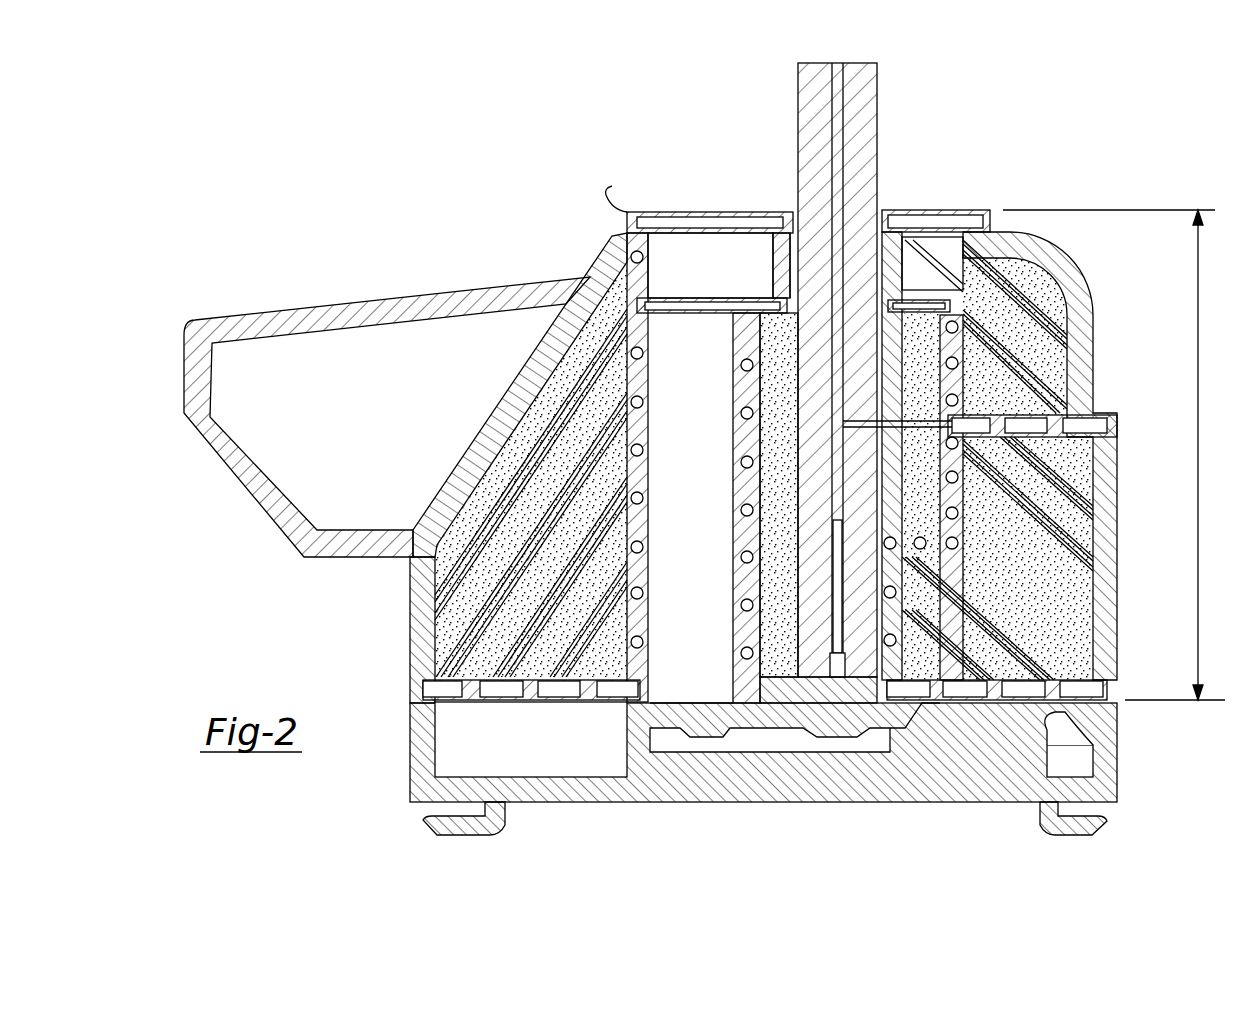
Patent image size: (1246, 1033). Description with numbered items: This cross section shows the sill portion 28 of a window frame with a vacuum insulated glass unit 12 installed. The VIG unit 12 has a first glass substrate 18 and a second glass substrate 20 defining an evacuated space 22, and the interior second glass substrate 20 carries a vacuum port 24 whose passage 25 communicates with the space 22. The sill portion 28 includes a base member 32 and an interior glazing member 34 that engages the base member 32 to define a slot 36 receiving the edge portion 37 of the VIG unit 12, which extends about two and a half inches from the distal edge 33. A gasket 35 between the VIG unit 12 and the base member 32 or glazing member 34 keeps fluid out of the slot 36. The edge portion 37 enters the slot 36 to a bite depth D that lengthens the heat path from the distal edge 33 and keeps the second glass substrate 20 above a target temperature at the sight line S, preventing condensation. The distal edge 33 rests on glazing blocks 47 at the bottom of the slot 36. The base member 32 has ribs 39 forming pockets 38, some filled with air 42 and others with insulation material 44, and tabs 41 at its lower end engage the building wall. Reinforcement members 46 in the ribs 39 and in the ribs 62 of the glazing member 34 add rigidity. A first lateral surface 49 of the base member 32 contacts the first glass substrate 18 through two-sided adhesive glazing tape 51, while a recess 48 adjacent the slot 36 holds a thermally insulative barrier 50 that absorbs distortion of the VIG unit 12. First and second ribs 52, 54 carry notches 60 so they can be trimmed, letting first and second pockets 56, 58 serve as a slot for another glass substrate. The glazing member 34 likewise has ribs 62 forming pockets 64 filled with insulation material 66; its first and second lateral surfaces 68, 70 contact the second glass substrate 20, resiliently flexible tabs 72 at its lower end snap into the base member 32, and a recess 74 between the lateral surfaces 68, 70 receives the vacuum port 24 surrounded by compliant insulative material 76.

The vacuum insulated glass unit 12 is at (843, 441).
The first glass substrate 18 is at (797, 115).
The second glass substrate 20 is at (880, 100).
The space 22 is at (833, 97).
The vacuum port 24 is at (1037, 310).
The passage 25 is at (1060, 450).
The sill portion 28 is at (504, 433).
The base member 32 is at (468, 283).
The distal edge 33 is at (833, 690).
The glazing member 34 is at (1011, 434).
The gasket 35 is at (793, 200).
The slot 36 is at (845, 265).
The edge portion 37 is at (905, 240).
The pockets 38 is at (377, 337).
The ribs 39 is at (497, 410).
The tabs 41 is at (435, 825).
The air 42 is at (255, 360).
The insulation material 44 is at (440, 608).
The reinforcement members 46 is at (920, 300).
The glazing blocks 47 is at (843, 655).
The recess 48 is at (777, 400).
The first lateral surface 49 is at (803, 235).
The thermally insulative barrier 50 is at (757, 655).
The two-sided adhesive glazing tape 51 is at (872, 280).
The first rib 52 is at (657, 215).
The second rib 54 is at (677, 293).
The first pocket 56 is at (613, 277).
The second pocket 58 is at (660, 483).
The notches 60 is at (622, 238).
The ribs 62 is at (1118, 437).
The pockets 64 is at (1063, 307).
The insulation material 66 is at (1045, 292).
The first lateral surface 68 is at (870, 302).
The second lateral surface 70 is at (883, 605).
The resiliently flexible tabs 72 is at (917, 727).
The recess 74 is at (933, 470).
The insulative material 76 is at (1087, 610).
The sight line S is at (883, 212).
The bite depth D is at (1114, 455).